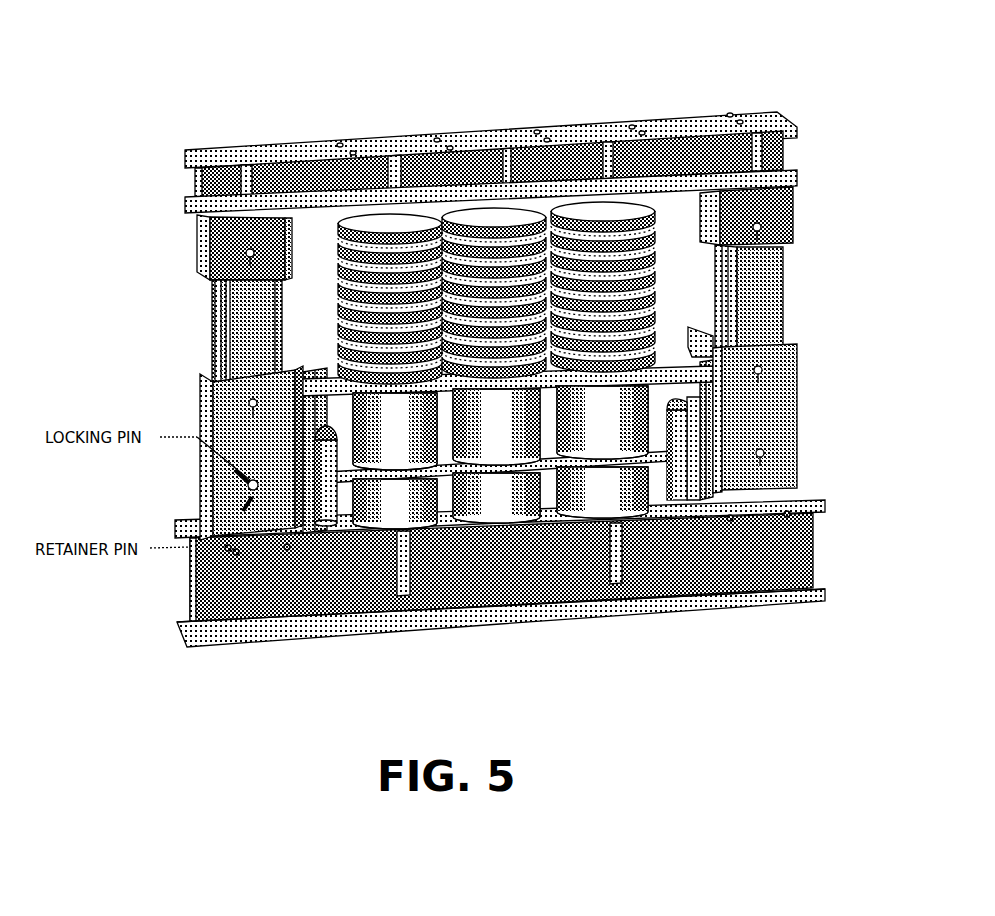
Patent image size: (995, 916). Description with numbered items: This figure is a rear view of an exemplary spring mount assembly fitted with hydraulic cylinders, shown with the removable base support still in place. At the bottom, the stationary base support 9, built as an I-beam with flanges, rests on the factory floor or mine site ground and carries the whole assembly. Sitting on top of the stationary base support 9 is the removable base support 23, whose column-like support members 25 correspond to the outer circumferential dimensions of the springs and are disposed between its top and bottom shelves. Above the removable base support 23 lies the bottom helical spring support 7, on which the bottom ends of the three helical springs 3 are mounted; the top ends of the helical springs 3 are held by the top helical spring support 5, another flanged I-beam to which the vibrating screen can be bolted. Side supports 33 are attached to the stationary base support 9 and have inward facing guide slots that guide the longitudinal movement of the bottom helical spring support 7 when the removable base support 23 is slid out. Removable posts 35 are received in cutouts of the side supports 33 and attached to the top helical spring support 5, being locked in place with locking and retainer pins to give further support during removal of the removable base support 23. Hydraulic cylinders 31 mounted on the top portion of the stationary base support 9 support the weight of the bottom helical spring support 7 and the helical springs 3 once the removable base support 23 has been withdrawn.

The top helical spring support 5 is at (463, 147).
The helical springs 3 is at (473, 237).
The removable posts 35 is at (748, 313).
The side supports 33 is at (748, 413).
The hydraulic cylinders 31 is at (327, 500).
The stationary base support 9 is at (340, 583).
The support members 25 is at (500, 493).
The removable base support 23 is at (632, 517).
The bottom helical spring support 7 is at (675, 393).